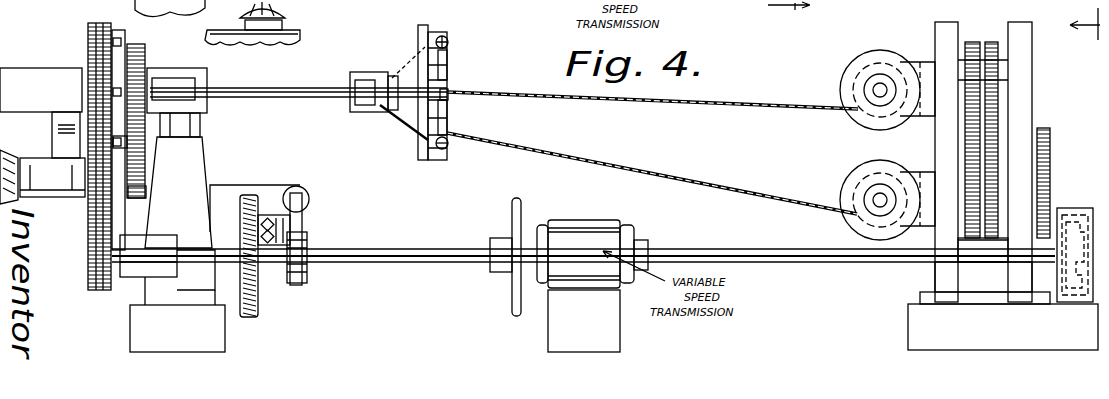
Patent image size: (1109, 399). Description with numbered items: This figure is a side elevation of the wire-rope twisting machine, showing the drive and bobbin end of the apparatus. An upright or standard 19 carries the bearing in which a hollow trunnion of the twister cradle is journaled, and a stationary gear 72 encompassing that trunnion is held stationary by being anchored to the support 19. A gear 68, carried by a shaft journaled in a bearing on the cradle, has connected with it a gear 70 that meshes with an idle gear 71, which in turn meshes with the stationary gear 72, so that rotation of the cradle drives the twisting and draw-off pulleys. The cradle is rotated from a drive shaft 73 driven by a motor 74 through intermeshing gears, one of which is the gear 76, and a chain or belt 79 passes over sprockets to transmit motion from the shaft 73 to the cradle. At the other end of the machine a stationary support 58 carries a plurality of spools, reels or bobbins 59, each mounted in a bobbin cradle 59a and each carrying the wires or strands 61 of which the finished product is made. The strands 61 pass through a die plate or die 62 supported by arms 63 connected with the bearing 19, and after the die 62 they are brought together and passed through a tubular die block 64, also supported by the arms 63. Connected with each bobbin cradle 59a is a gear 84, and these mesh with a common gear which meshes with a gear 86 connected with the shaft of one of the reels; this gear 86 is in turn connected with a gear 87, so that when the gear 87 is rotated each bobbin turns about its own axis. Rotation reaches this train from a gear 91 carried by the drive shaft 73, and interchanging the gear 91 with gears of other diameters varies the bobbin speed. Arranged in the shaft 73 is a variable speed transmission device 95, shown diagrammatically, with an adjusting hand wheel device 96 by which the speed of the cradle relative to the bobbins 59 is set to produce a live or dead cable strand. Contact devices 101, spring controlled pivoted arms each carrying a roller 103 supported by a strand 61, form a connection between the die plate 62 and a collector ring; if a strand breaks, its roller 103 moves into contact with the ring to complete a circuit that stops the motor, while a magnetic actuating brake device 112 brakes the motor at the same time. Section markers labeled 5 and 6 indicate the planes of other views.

The section line for FIG. 5 is at (789, 14).
The section line for FIG. 6 is at (1085, 29).
The upright or standard 19 is at (207, 158).
The stationary support 58 is at (983, 151).
The spools, reels or bobbins 59 is at (875, 191).
The bobbin cradle 59a is at (887, 71).
The wires or strands 61 is at (605, 107).
The die plate or die 62 is at (406, 114).
The arms 63 is at (298, 79).
The tubular die block 64 is at (367, 79).
The gear 68 is at (16, 161).
The gear 70 is at (155, 204).
The idle gear 71 is at (150, 160).
The stationary gear 72 is at (155, 115).
The drive shaft 73 is at (583, 271).
The motor 74 is at (279, 23).
The gear 76 is at (267, 234).
The chain or belt 79 is at (99, 156).
The gear 84 is at (984, 140).
The gear 86 is at (934, 262).
The gear 87 is at (1061, 177).
The gear 91 is at (1075, 152).
The variable speed transmission device 95 is at (592, 269).
The adjusting hand wheel device 96 is at (493, 257).
The contact devices 101 is at (481, 96).
The roller 103 is at (482, 111).
The magnetic actuating brake device 112 is at (331, 214).